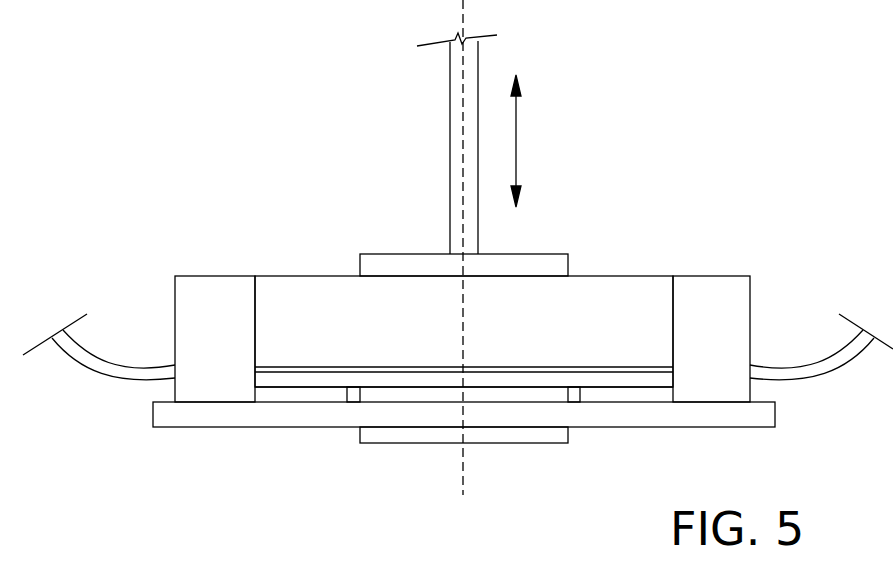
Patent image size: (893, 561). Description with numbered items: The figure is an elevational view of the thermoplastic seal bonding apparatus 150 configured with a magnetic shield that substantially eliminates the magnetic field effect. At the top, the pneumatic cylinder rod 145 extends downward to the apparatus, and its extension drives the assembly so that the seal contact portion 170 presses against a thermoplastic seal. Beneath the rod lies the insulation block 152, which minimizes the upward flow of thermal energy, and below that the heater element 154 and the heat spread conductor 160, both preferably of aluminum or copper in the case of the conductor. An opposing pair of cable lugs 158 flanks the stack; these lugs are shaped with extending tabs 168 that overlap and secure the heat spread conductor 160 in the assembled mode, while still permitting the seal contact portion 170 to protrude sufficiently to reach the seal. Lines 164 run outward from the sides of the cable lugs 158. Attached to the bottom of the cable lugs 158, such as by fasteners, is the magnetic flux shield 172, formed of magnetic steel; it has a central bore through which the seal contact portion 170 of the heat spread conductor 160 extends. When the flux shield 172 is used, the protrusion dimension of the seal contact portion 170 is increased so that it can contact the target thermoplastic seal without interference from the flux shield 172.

The pneumatic cylinder rod 145 is at (450, 122).
The seal bonding apparatus 150 is at (458, 253).
The insulation block 152 is at (315, 295).
The heater element 154 is at (553, 365).
The cable lugs 158 is at (203, 303).
The heat spread conductor 160 is at (405, 379).
The flexible lines 164 is at (108, 380).
The extending tabs 168 is at (278, 392).
The seal contact portion 170 is at (480, 444).
The magnetic flux shield 172 is at (185, 412).